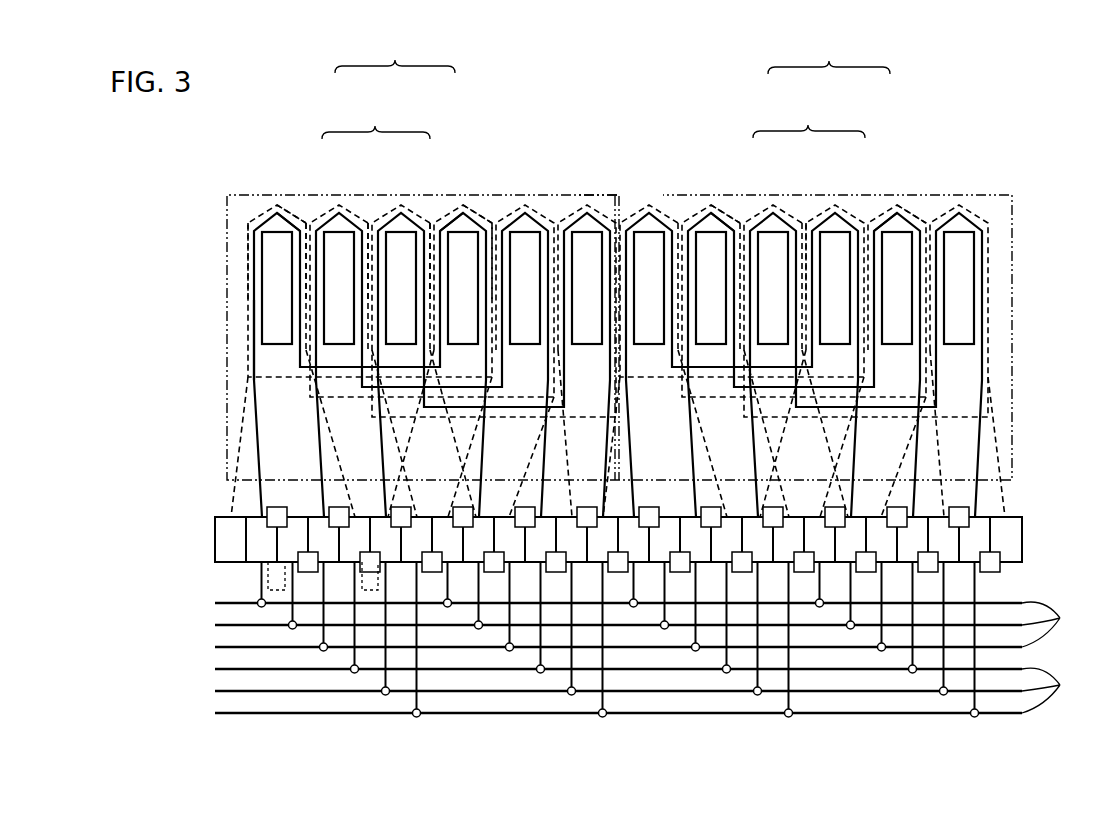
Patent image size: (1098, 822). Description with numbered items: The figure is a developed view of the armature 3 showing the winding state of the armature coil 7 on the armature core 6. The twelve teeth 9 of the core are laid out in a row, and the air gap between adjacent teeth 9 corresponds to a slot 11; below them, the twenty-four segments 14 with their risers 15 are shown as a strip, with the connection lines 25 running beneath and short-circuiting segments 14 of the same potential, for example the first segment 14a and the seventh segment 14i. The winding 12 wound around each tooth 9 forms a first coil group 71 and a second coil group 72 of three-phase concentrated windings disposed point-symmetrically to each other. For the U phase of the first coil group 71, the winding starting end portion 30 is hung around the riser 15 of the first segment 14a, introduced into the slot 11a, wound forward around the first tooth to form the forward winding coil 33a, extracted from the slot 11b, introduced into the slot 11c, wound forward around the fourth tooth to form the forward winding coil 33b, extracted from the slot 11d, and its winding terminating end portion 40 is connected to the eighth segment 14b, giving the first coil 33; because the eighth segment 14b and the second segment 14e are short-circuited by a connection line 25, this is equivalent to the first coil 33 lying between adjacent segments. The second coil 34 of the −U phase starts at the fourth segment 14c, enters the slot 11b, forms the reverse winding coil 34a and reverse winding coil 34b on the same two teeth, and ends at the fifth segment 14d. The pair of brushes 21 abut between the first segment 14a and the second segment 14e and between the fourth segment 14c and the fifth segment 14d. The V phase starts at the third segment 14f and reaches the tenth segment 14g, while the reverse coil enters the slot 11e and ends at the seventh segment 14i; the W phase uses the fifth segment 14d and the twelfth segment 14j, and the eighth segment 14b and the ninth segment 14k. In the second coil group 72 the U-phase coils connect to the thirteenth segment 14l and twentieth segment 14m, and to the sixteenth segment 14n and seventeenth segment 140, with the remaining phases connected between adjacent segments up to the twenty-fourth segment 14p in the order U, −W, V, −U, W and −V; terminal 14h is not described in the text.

The armature 3 is at (1020, 217).
The armature core 6 is at (1018, 313).
The armature coil 7 is at (518, 190).
The first coil group 71 is at (578, 193).
The second coil group 72 is at (663, 193).
The tooth 9 is at (989, 270).
The slot 11 is at (806, 220).
The slot between first and twelfth tooth 11a is at (246, 230).
The slot between first and second tooth 11b is at (305, 245).
The slot between third and fourth tooth 11c is at (428, 226).
The slot between fourth and fifth tooth 11d is at (494, 232).
The slot between second and third tooth 11e is at (368, 252).
The winding 12 is at (254, 432).
The segment 14 is at (1022, 537).
The riser 15 is at (652, 541).
The first segment 14a is at (257, 585).
The eighth segment 14b is at (482, 565).
The fourth segment 14c is at (341, 565).
The fifth segment 14d is at (393, 565).
The second segment 14e is at (284, 565).
The third segment 14f is at (327, 565).
The tenth segment 14g is at (544, 565).
The terminal 14h is at (413, 565).
The seventh segment 14i is at (452, 565).
The twelfth segment 14j is at (594, 565).
The ninth segment 14k is at (517, 565).
The thirteenth segment 14l is at (643, 565).
The twentieth segment 14m is at (843, 565).
The sixteenth segment 14n is at (717, 565).
The seventeenth segment 140 is at (763, 565).
The twenty-fourth segment 14p is at (970, 565).
The brush 21 is at (272, 592).
The connection line 25 is at (652, 657).
The winding starting end portion 30 is at (256, 497).
The winding terminating end portion 40 is at (398, 459).
The first coil 33 is at (593, 121).
The forward winding coil 33a is at (293, 224).
The forward winding coil 33b is at (450, 224).
The second coil 34 is at (612, 56).
The reverse winding coil 34a is at (291, 214).
The reverse winding coil 34b is at (479, 217).